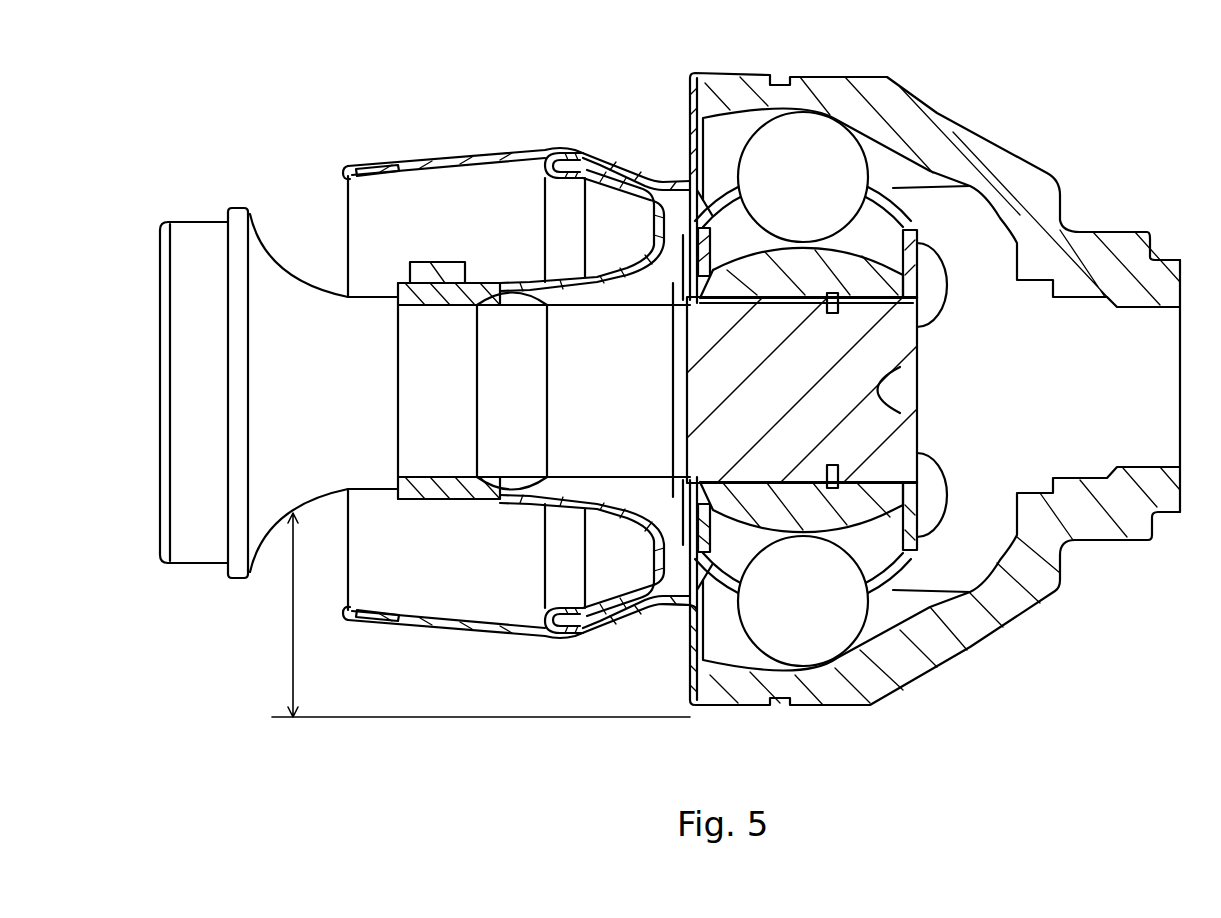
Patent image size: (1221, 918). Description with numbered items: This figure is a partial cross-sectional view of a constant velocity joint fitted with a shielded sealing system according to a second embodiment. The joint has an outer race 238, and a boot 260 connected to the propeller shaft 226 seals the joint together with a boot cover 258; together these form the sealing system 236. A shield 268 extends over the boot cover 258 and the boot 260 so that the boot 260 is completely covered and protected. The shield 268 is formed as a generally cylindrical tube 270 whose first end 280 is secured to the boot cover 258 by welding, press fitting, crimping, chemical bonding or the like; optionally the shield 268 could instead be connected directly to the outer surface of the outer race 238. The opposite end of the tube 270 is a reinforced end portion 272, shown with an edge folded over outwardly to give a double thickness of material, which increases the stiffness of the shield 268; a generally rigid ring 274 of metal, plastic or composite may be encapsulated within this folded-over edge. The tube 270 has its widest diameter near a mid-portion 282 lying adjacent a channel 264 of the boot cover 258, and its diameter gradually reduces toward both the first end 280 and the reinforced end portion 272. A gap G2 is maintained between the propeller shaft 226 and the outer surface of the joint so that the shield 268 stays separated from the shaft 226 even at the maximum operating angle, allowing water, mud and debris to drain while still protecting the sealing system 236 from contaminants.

The propeller shaft 226 is at (291, 300).
The sealing system 236 is at (609, 553).
The outer race 238 is at (833, 77).
The boot cover 258 is at (677, 605).
The boot 260 is at (580, 275).
The channel 264 is at (569, 640).
The shield 268 is at (443, 654).
The tube 270 is at (465, 158).
The reinforced end portion 272 is at (371, 627).
The ring 274 is at (351, 166).
The first end 280 is at (623, 167).
The mid-portion 282 is at (567, 146).
The gap G2 is at (481, 615).